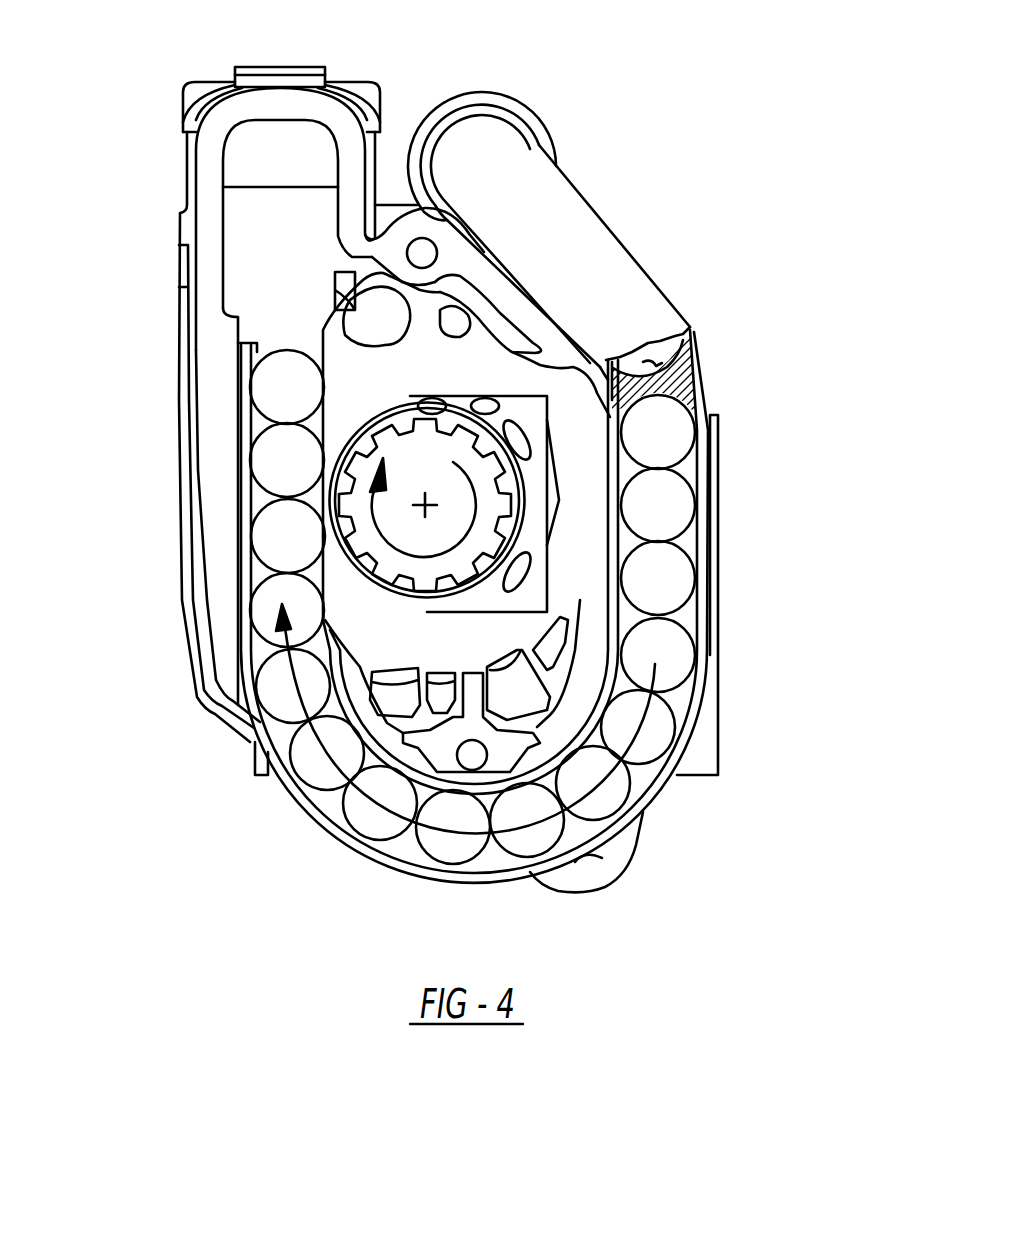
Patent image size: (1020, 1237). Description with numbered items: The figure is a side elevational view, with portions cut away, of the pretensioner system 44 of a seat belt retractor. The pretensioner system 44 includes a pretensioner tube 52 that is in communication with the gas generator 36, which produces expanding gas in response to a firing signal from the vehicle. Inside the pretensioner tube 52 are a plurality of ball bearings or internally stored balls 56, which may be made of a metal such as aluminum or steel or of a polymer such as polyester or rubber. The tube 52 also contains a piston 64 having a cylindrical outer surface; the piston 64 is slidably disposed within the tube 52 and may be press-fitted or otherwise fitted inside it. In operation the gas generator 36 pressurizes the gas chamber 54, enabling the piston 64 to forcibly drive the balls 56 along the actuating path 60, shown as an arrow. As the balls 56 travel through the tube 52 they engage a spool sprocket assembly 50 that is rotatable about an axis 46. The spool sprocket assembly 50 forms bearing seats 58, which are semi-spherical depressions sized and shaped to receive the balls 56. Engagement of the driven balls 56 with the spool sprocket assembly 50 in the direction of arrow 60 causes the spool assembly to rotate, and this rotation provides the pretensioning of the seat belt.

The gas generator 36 is at (508, 92).
The pretensioner system 44 is at (643, 160).
The axis 46 is at (425, 505).
The spool sprocket assembly 50 is at (505, 483).
The pretensioner tube 52 is at (620, 235).
The gas chamber 54 is at (663, 343).
The balls 56 is at (695, 652).
The bearing seats 58 is at (327, 550).
The actuating path 60 is at (445, 836).
The piston 64 is at (687, 392).